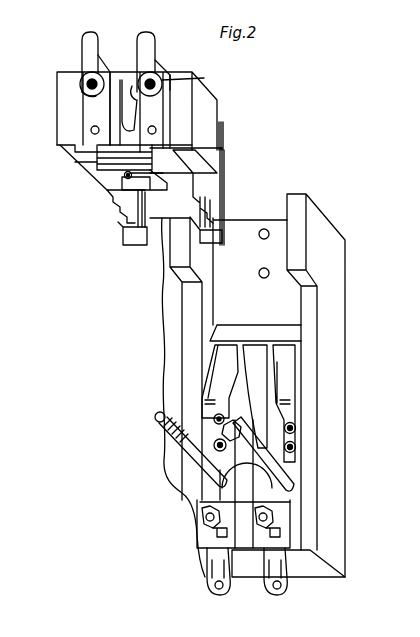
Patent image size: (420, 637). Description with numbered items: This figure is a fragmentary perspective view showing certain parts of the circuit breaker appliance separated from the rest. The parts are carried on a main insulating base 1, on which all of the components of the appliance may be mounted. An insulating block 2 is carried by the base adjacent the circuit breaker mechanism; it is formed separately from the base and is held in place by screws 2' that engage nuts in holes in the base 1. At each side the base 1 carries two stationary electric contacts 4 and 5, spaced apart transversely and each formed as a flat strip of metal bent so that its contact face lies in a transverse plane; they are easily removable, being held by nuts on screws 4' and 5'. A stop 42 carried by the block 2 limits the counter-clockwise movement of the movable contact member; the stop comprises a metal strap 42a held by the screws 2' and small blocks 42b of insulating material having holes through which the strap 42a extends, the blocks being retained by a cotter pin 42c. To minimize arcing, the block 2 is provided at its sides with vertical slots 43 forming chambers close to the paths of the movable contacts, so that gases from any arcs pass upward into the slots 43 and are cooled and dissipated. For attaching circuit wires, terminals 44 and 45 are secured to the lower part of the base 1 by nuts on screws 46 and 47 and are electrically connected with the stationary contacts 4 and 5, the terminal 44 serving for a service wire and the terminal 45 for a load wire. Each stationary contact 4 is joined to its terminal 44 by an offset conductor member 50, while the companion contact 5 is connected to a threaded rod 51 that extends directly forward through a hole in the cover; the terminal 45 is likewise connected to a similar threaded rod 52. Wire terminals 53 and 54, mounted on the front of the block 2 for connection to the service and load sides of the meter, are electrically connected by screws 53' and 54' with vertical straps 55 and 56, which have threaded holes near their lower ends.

The main insulating base 1 is at (337, 388).
The block 2 is at (129, 112).
The screw 2' is at (129, 97).
The stationary electric contact 4 is at (187, 381).
The screw 4' is at (183, 423).
The stationary electric contact 5 is at (329, 398).
The screw 5' is at (336, 428).
The stop 42 is at (133, 110).
The metal strap 42a is at (164, 114).
The small block of insulating material 42b is at (115, 158).
The cotter pin 42c is at (128, 176).
The vertical slot 43 is at (125, 228).
The terminal 44 is at (288, 580).
The terminal 45 is at (215, 574).
The screw 46 is at (278, 520).
The screw 47 is at (202, 518).
The offset conductor member 50 is at (243, 484).
The threaded rod 51 is at (250, 456).
The threaded rod 52 is at (198, 453).
The wire terminal 53 is at (166, 64).
The screw 53' is at (201, 75).
The wire terminal 54 is at (80, 88).
The screw 54' is at (60, 80).
The vertical strap 55 is at (158, 128).
The vertical strap 56 is at (92, 122).